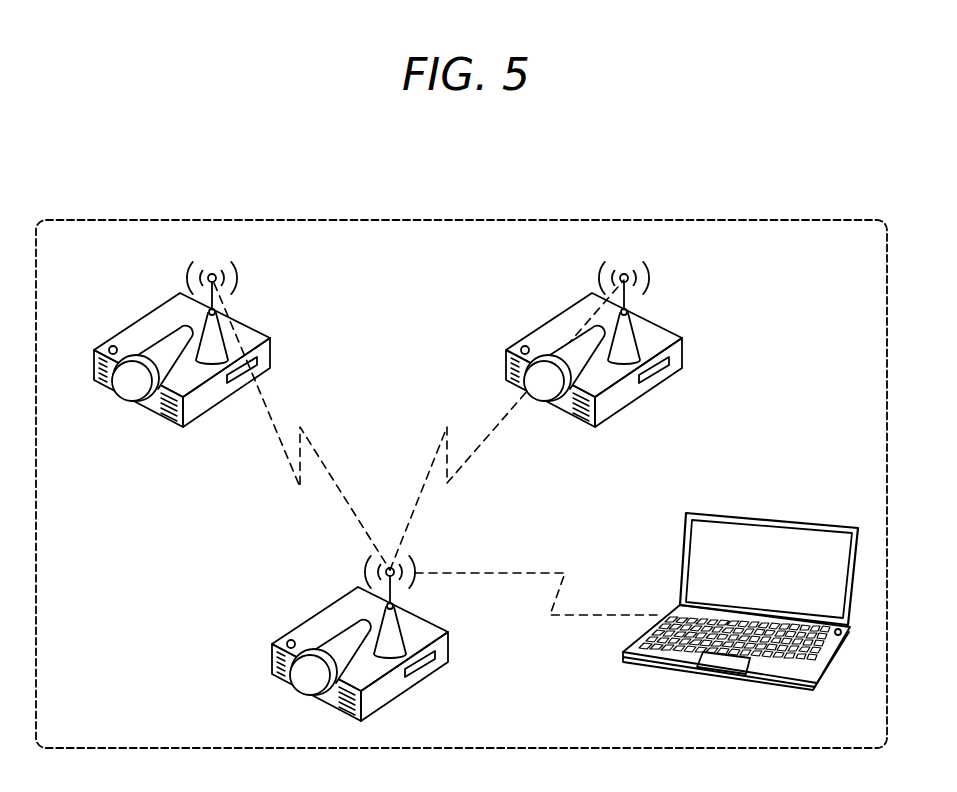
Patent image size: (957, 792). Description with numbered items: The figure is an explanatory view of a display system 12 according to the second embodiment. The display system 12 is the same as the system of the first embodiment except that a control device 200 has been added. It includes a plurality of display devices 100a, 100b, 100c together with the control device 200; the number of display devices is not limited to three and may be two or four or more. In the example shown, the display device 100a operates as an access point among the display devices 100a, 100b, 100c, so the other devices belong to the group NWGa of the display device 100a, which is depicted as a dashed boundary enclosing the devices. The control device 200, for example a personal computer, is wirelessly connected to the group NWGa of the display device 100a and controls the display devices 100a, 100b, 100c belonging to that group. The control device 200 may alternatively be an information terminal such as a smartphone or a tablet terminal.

The display system 12 is at (118, 183).
The group NWGa is at (417, 218).
The display device 100a is at (350, 638).
The display device 100b is at (140, 322).
The display device 100c is at (584, 344).
The control device 200 is at (697, 513).